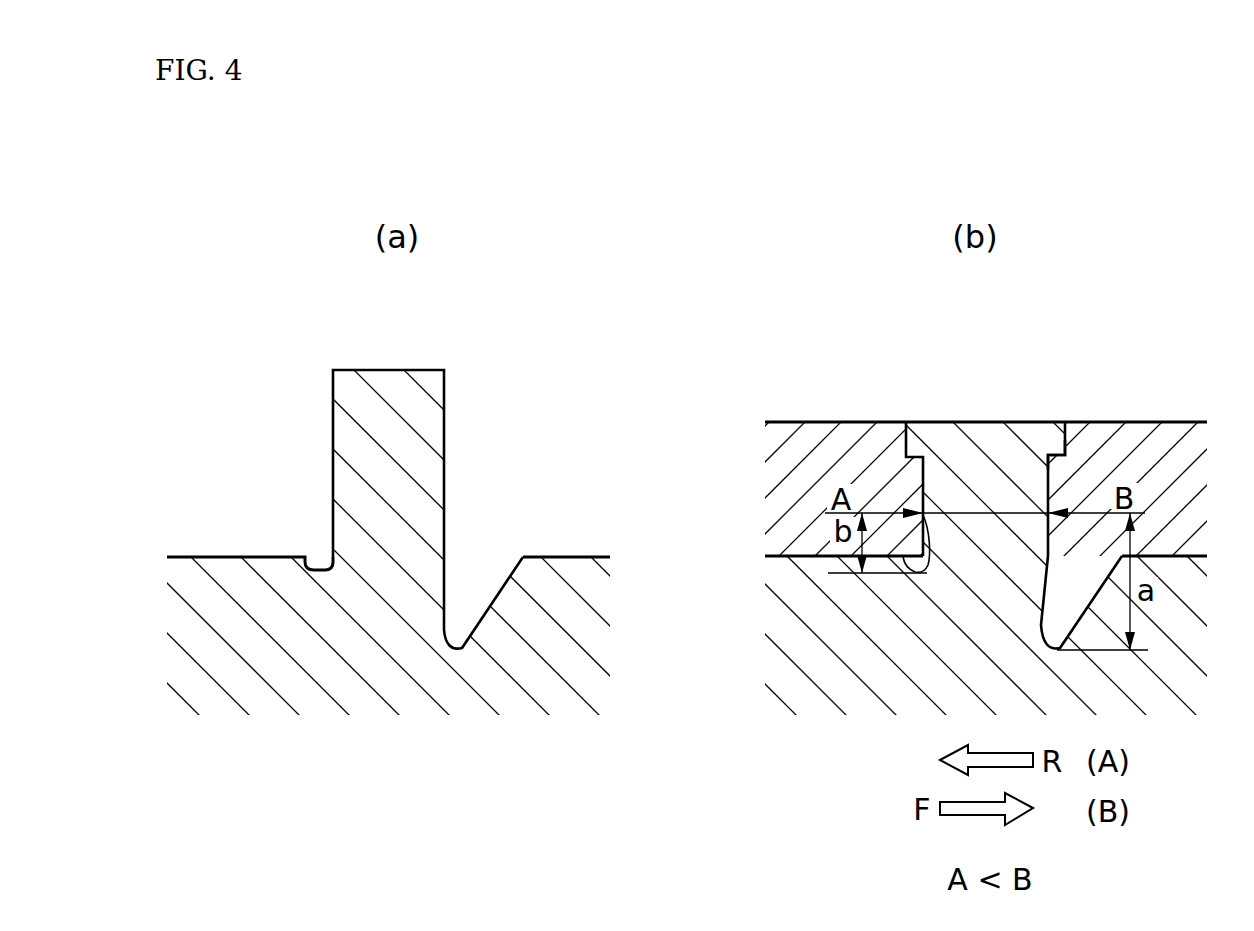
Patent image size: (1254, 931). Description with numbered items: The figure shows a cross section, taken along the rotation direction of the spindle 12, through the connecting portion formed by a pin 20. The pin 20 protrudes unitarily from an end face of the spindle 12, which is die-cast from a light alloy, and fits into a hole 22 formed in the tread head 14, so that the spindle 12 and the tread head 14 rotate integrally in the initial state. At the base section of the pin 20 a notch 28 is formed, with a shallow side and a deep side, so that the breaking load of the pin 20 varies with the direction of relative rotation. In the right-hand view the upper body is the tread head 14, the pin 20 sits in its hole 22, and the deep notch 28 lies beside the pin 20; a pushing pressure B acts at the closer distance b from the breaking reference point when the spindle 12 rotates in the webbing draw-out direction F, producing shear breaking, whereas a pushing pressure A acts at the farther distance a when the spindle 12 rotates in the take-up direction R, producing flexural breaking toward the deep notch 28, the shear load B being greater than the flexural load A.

The spindle 12 is at (283, 670).
The tread head 14 is at (827, 450).
The pin 20 is at (387, 382).
The hole 22 is at (1052, 478).
The notch 28 is at (463, 618).